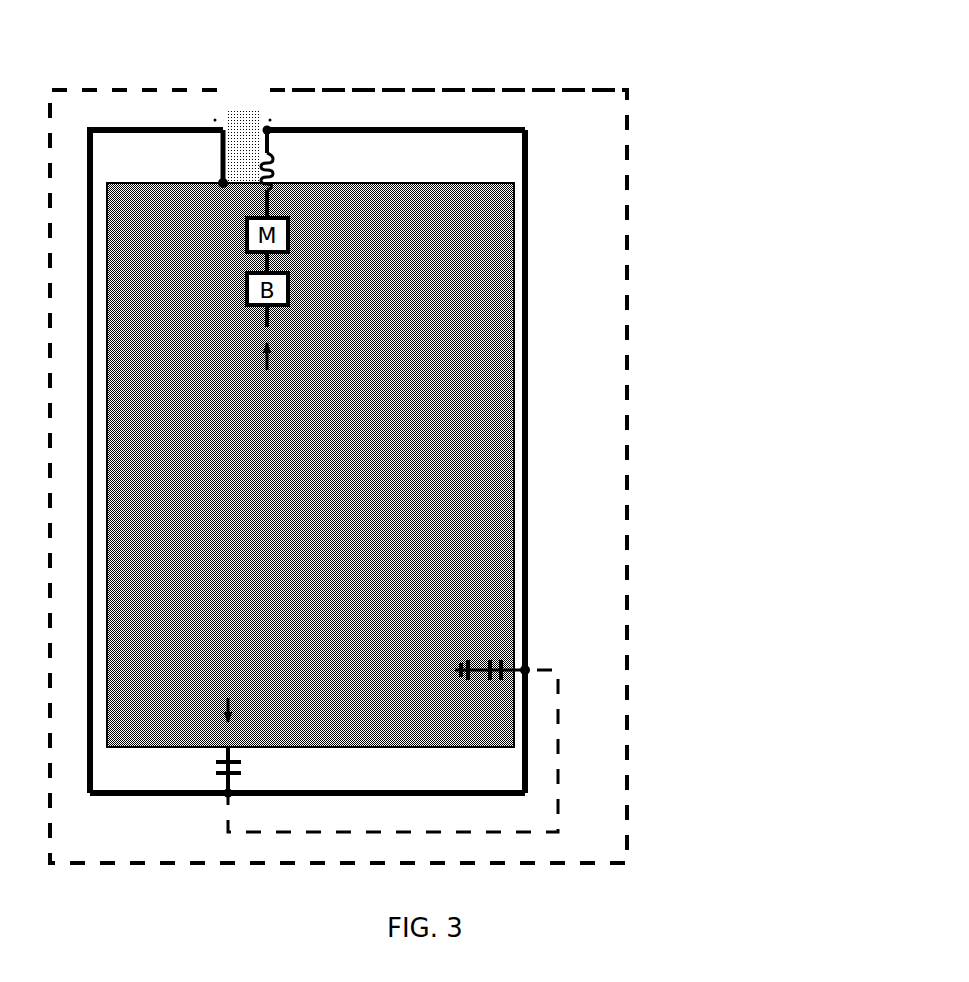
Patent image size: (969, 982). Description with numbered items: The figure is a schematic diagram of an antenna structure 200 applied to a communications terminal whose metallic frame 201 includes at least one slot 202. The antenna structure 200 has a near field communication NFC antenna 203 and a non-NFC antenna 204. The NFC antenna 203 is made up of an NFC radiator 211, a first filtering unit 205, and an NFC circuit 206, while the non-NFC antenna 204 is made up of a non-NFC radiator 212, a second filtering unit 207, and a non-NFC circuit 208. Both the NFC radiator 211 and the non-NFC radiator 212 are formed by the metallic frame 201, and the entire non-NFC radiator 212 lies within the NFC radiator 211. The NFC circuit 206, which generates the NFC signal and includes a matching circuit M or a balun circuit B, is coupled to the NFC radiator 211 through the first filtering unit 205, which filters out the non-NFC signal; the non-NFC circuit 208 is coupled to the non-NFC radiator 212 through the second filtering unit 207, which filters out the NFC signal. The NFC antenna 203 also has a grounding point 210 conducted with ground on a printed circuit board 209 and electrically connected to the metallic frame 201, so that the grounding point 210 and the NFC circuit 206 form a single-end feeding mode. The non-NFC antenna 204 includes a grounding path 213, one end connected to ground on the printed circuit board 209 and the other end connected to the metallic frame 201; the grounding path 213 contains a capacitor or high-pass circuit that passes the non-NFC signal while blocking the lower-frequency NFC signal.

The antenna structure 200 is at (712, 111).
The metallic frame 201 is at (532, 253).
The slot 202 is at (240, 108).
The near field communication NFC antenna 203 is at (328, 84).
The non-NFC antenna 204 is at (562, 756).
The first filtering unit 205 is at (291, 172).
The NFC circuit 206 is at (278, 370).
The second filtering unit 207 is at (252, 772).
The non-NFC circuit 208 is at (253, 694).
The printed circuit board 209 is at (480, 366).
The grounding point 210 is at (199, 159).
The NFC radiator 211 is at (352, 129).
The non-NFC radiator 212 is at (336, 800).
The grounding path 213 is at (492, 650).